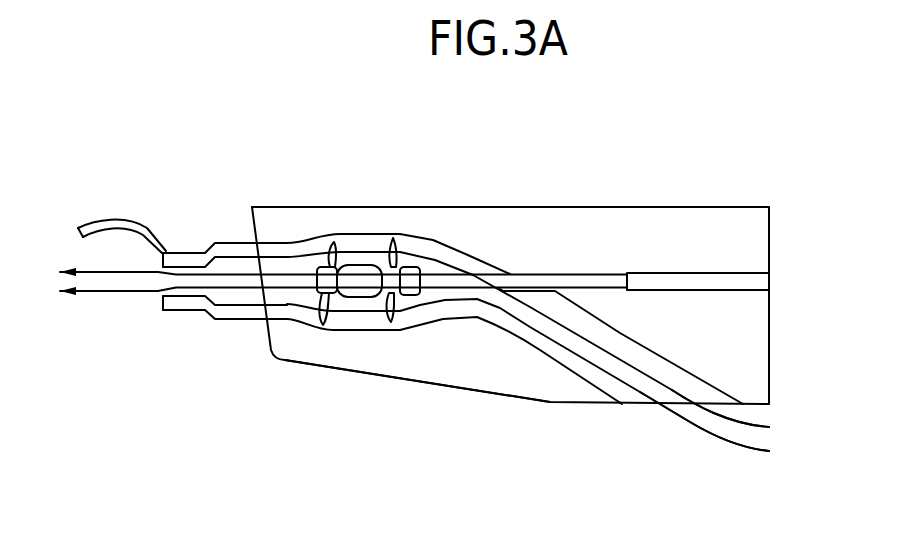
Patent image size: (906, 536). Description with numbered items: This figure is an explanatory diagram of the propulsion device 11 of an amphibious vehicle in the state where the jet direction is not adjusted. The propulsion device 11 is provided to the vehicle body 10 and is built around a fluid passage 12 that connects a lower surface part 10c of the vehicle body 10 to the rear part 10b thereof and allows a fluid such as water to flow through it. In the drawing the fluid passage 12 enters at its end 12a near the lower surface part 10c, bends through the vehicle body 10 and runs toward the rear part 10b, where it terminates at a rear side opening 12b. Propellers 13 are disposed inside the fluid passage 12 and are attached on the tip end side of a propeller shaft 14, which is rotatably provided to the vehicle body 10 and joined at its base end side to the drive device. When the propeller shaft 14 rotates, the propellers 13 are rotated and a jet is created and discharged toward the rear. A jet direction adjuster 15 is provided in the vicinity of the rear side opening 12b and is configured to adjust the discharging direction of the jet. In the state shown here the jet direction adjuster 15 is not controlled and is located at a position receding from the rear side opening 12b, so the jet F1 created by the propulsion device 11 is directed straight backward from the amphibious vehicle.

The vehicle body 10 is at (776, 332).
The rear part of the vehicle body 10b is at (272, 336).
The lower surface part of the vehicle body 10c is at (500, 399).
The propulsion device 11 is at (358, 388).
The fluid passage 12 is at (586, 388).
The outlet end of tube 12a is at (637, 405).
The rear side opening 12b is at (256, 259).
The propeller 13 is at (392, 240).
The propeller shaft 14 is at (568, 280).
The jet direction adjuster 15 is at (132, 218).
The jet F1 is at (112, 294).